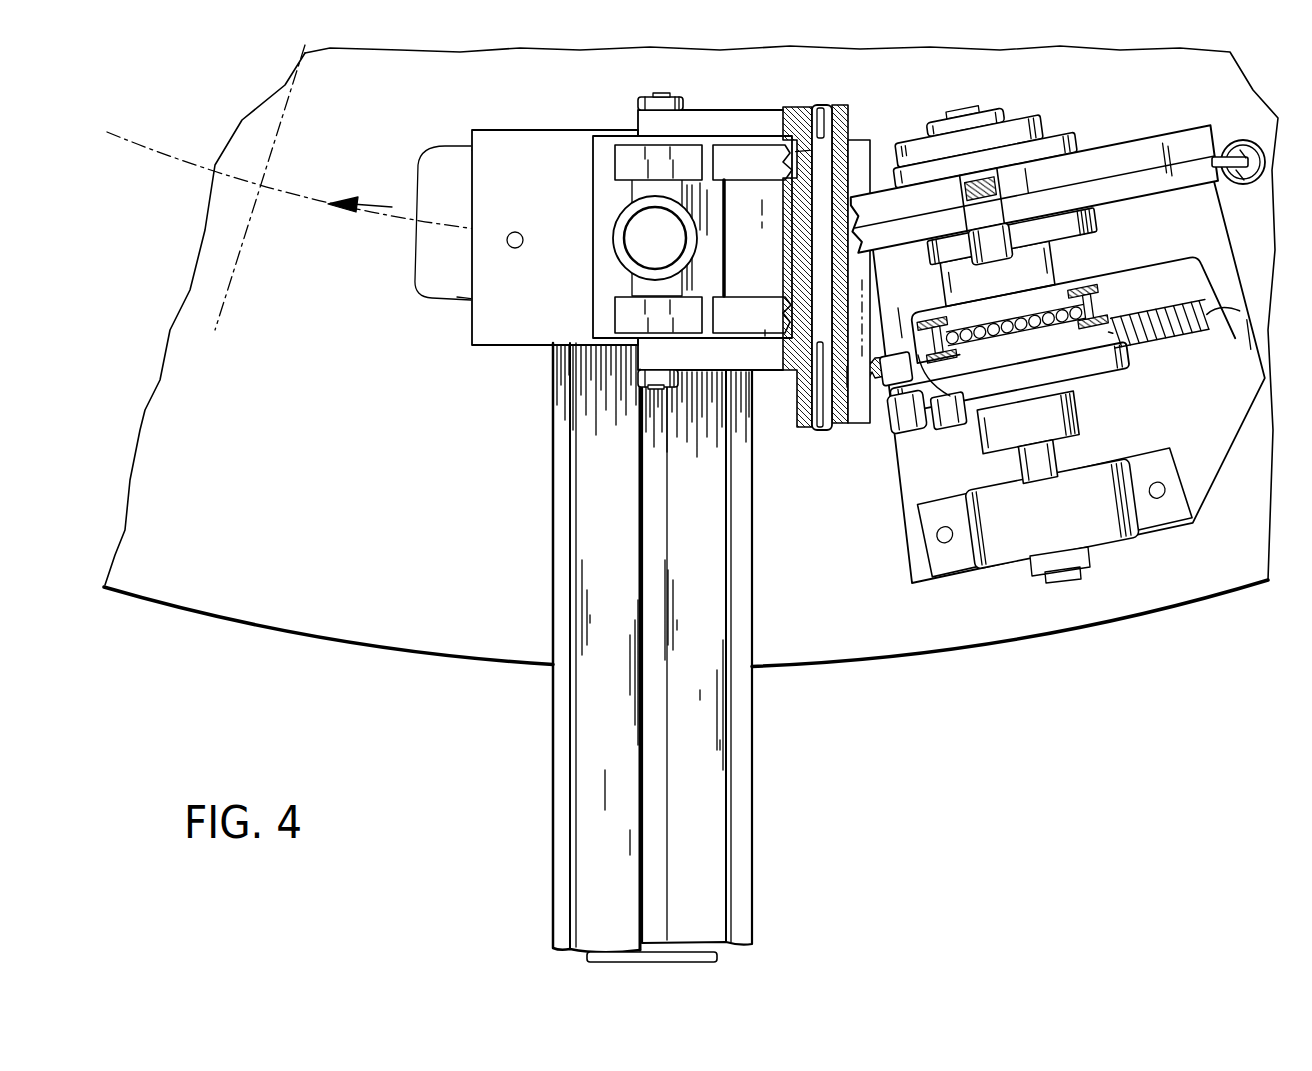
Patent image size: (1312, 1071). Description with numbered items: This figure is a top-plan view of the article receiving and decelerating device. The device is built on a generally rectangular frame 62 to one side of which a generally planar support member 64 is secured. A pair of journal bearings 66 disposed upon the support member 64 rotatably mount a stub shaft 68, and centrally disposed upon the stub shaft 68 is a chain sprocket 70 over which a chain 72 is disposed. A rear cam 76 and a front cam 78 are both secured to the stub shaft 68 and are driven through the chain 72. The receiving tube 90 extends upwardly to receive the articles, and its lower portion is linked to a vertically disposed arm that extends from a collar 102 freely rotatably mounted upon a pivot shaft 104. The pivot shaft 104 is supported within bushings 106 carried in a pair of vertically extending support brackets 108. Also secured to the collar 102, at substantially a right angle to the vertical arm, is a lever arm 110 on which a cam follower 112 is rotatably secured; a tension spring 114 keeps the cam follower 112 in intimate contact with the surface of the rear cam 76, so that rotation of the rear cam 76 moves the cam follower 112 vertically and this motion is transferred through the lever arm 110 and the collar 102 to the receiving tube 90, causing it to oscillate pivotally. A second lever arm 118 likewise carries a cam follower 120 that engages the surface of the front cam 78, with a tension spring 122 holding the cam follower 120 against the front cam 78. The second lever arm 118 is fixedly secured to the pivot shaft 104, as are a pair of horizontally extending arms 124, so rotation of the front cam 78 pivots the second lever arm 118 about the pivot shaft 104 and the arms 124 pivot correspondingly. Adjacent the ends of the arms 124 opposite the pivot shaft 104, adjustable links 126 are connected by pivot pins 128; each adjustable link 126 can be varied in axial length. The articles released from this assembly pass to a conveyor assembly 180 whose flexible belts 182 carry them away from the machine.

The frame 62 is at (490, 335).
The support member 64 is at (1205, 460).
The journal bearings 66 is at (1023, 133).
The stub shaft 68 is at (1025, 463).
The chain sprocket 70 is at (965, 322).
The chain 72 is at (1095, 302).
The rear cam 76 is at (1097, 222).
The front cam 78 is at (1078, 378).
The receiving tube 90 is at (643, 238).
The collar 102 is at (862, 247).
The pivot shaft 104 is at (825, 150).
The bushings 106 is at (826, 155).
The support brackets 108 is at (760, 172).
The lever arm 110 is at (1128, 180).
The cam follower 112 is at (995, 248).
The tension spring 114 is at (1235, 150).
The second lever arm 118 is at (890, 380).
The cam follower 120 is at (895, 427).
The tension spring 122 is at (1182, 347).
The horizontally extending arms 124 is at (742, 130).
The adjustable links 126 is at (636, 103).
The pivot pins 128 is at (661, 93).
The conveyor assembly 180 is at (487, 714).
The flexible belts 182 is at (735, 846).